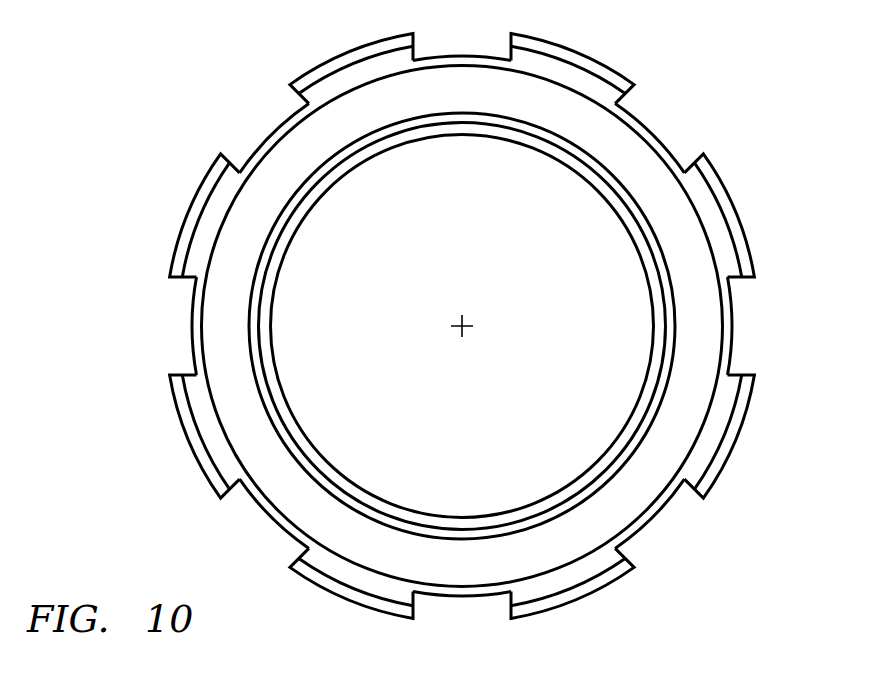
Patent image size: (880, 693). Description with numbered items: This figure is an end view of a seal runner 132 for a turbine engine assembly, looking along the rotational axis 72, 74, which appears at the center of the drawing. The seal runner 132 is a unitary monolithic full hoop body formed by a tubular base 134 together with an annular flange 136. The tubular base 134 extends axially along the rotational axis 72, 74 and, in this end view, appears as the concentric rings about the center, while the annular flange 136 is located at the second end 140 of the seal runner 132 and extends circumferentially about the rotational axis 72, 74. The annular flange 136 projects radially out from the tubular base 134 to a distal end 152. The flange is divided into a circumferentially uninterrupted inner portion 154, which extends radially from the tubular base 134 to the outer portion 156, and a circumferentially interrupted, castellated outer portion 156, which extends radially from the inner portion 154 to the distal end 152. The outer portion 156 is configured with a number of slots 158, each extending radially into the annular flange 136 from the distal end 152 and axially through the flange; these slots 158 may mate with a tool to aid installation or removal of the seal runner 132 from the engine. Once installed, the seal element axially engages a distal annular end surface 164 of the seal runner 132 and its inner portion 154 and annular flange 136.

The seal runner 132 is at (745, 80).
The tubular base 134 is at (618, 216).
The annular flange 136 is at (733, 193).
The second end 140 is at (212, 445).
The distal end 152 is at (737, 446).
The inner portion 154 is at (735, 332).
The outer portion 156 is at (743, 238).
The slots 158 is at (248, 130).
The distal annular end surface 164 is at (647, 163).
The rotational axis 72 is at (458, 328).
The rotational axis 74 is at (462, 326).